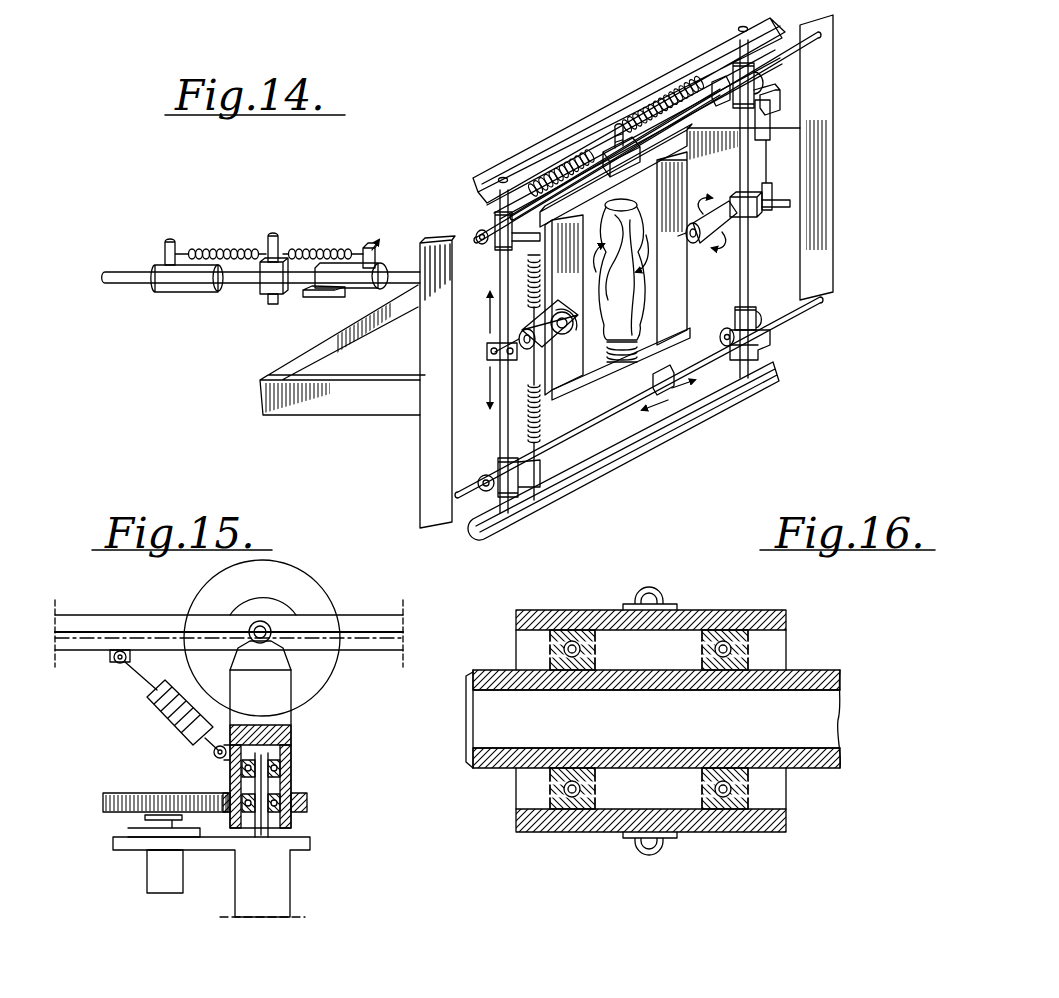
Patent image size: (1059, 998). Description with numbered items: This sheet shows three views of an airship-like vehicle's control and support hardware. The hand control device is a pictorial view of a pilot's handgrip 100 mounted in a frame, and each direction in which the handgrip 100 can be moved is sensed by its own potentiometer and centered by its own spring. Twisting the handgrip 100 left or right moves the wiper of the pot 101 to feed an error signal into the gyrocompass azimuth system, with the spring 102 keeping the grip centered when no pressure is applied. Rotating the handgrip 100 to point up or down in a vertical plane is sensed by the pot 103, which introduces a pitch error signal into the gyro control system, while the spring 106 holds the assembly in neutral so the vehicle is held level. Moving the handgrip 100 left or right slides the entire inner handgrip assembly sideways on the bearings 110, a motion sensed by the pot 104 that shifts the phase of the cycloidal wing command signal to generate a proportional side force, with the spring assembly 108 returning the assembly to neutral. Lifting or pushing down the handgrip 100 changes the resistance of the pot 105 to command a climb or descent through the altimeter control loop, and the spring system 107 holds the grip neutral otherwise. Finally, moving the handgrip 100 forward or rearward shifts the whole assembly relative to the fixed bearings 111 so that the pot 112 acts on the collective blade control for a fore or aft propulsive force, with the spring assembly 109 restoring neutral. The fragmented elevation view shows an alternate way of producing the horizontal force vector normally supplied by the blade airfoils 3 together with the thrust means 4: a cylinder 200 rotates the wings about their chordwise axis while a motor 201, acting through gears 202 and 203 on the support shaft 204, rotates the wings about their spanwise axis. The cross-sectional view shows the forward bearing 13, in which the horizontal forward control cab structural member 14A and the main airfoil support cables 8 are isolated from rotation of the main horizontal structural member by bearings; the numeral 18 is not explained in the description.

In FIG. 15, the blade airfoils 3 is at (93, 619).
In FIG. 15, the thrust means 4 is at (272, 612).
In FIG. 16, the main airfoil support cables 8 is at (610, 527).
In FIG. 16, the forward bearing 13 is at (745, 623).
In FIG. 16, the horizontal forward control cab structural member 14A is at (492, 681).
In FIG. 16, the ball bearing 18 is at (755, 659).
In FIG. 14, the handgrip 100 is at (628, 300).
In FIG. 14, the potentiometer 101 is at (603, 440).
In FIG. 14, the spring 102 is at (625, 368).
In FIG. 14, the potentiometer 103 is at (520, 334).
In FIG. 14, the potentiometer 104 is at (755, 350).
In FIG. 14, the potentiometer 105 is at (770, 133).
In FIG. 14, the spring 106 is at (565, 352).
In FIG. 14, the spring system 107 is at (505, 262).
In FIG. 14, the spring assembly 108 is at (652, 108).
In FIG. 14, the spring assembly 109 is at (310, 247).
In FIG. 14, the bearings 110 is at (764, 78).
In FIG. 14, the fixed bearings 111 is at (318, 292).
In FIG. 14, the potentiometer 112 is at (338, 278).
In FIG. 15, the cylinder 200 is at (190, 716).
In FIG. 15, the motor 201 is at (165, 875).
In FIG. 15, the gear 202 is at (135, 776).
In FIG. 15, the gear 203 is at (308, 802).
In FIG. 15, the support shaft 204 is at (288, 740).